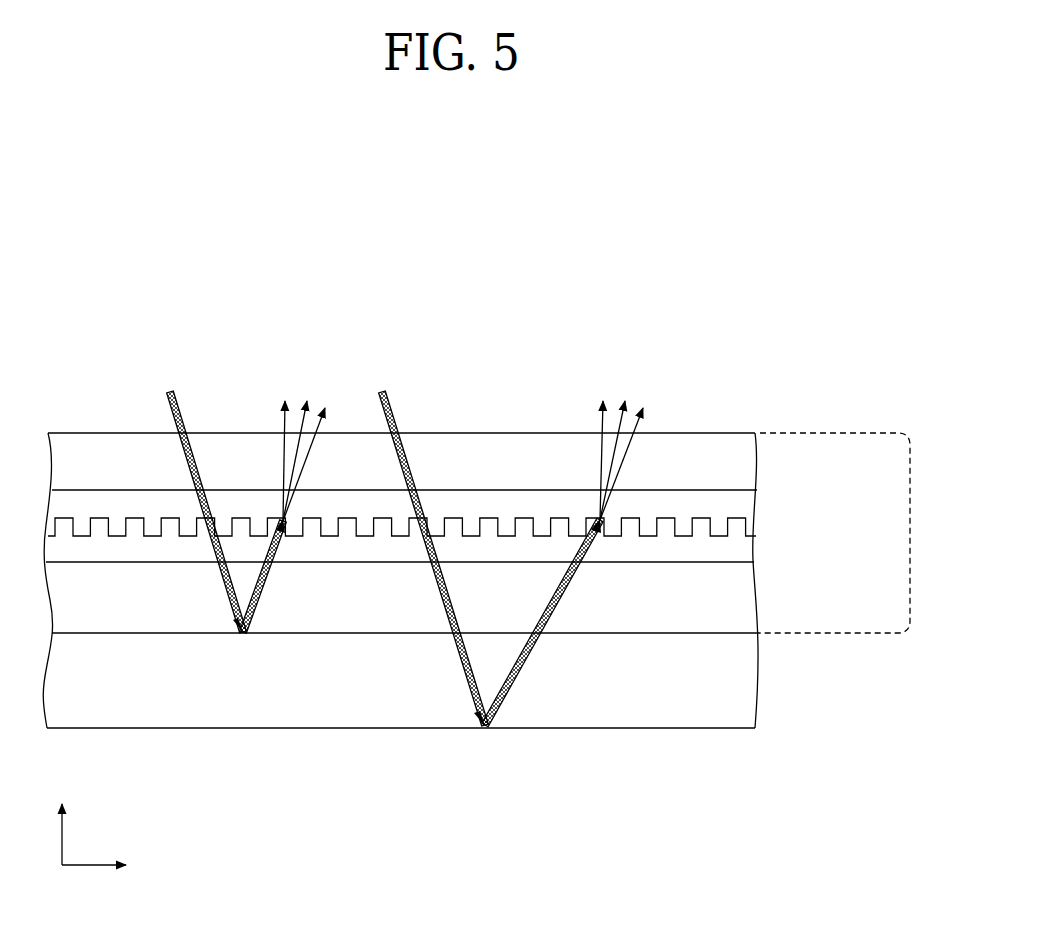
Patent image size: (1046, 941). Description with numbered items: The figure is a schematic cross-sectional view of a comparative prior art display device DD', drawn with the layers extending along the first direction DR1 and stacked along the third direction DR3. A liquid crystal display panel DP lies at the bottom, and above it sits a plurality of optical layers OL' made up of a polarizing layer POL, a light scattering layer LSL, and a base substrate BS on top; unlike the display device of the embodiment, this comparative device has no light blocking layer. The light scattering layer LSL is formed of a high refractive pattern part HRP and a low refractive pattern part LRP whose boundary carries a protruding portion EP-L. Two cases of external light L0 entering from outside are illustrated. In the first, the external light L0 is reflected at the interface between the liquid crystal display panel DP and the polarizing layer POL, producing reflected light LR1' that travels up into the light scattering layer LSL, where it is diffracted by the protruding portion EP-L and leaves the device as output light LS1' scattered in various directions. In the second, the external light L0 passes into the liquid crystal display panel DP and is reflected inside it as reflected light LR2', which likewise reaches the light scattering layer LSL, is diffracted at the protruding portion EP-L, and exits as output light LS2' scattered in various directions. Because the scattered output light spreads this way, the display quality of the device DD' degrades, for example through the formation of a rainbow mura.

The base substrate BS is at (745, 458).
The protruding portion EP-L is at (101, 527).
The high refractive pattern part HRP is at (745, 505).
The low refractive pattern part LRP is at (745, 549).
The light scattering layer LSL is at (843, 490).
The polarizing layer POL is at (745, 604).
The plurality of optical layers OL' is at (858, 533).
The liquid crystal display panel DP is at (745, 687).
The prior art display device DD' is at (685, 456).
The external light L0 is at (322, 542).
The reflected light LR1' is at (274, 576).
The reflected light LR2' is at (548, 622).
The output light LS1' is at (304, 442).
The output light LS2' is at (623, 443).
The first direction DR1 is at (115, 866).
The third direction DR3 is at (63, 819).